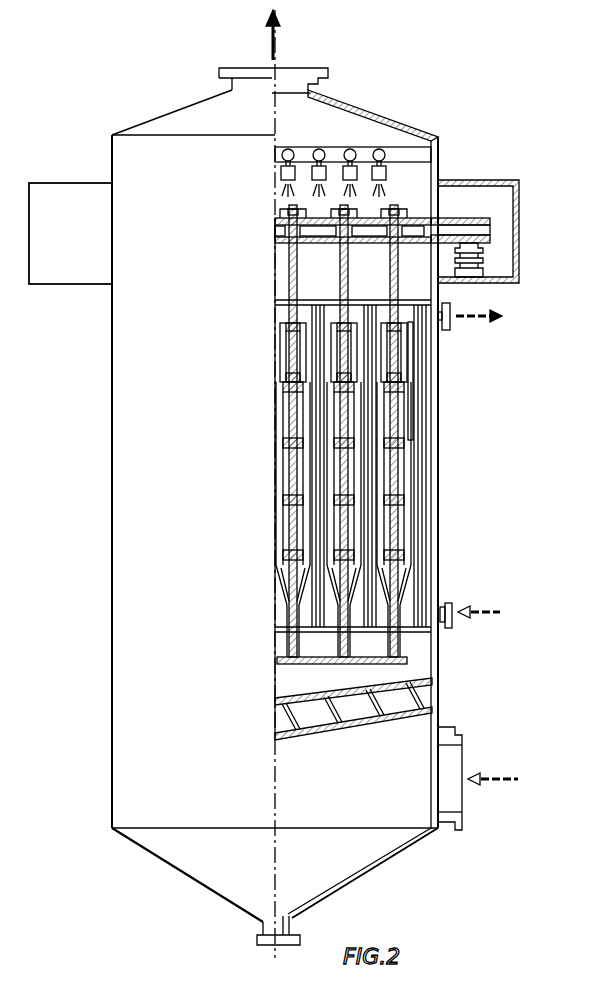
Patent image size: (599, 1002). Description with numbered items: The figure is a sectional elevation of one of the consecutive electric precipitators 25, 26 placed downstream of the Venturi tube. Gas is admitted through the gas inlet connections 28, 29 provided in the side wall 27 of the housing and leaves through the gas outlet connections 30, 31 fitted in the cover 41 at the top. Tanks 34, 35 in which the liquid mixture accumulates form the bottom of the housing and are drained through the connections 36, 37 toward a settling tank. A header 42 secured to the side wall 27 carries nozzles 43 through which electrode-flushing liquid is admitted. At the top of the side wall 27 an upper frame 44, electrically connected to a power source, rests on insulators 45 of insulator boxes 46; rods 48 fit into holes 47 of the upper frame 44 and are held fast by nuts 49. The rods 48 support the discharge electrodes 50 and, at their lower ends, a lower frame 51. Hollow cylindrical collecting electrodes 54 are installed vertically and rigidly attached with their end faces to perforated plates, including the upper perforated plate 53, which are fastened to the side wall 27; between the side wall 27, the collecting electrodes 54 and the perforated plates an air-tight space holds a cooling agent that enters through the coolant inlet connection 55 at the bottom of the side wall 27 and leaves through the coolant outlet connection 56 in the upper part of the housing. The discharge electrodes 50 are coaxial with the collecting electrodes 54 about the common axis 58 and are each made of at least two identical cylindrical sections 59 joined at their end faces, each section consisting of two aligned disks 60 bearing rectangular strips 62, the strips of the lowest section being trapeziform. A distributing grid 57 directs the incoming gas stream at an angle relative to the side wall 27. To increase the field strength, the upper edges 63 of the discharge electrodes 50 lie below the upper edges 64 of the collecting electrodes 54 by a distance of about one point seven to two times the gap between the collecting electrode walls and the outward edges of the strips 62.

The electric precipitator 25 is at (241, 506).
The electric precipitator 26 is at (113, 528).
The side wall 27 is at (431, 510).
The gas inlet connection 28 is at (489, 778).
The gas inlet connection 29 is at (455, 776).
The gas outlet connection 30 is at (293, 59).
The gas outlet connection 31 is at (291, 73).
The tank 34 is at (368, 873).
The tank 35 is at (360, 870).
The connection 36 is at (244, 931).
The connection 37 is at (262, 930).
The cover 41 is at (354, 110).
The header 42 is at (400, 148).
The nozzles 43 is at (388, 175).
The upper frame 44 is at (440, 218).
The insulators 45 is at (483, 270).
The insulator boxes 46 is at (63, 192).
The holes 47 is at (283, 236).
The rods 48 is at (394, 302).
The nuts 49 is at (328, 212).
The discharge electrodes 50 is at (304, 320).
The lower frame 51 is at (283, 662).
The upper perforated plate 53 is at (431, 633).
The collecting electrodes 54 is at (438, 476).
The coolant inlet connection 55 is at (445, 605).
The coolant outlet connection 56 is at (451, 320).
The distributing grid 57 is at (442, 691).
The axis 58 is at (424, 362).
The cylindrical sections 59 is at (282, 500).
The disks 60 is at (281, 332).
The rectangular strips 62 is at (422, 520).
The upper edges of the discharge electrodes 63 is at (349, 322).
The upper edges of the collecting electrodes 64 is at (396, 305).